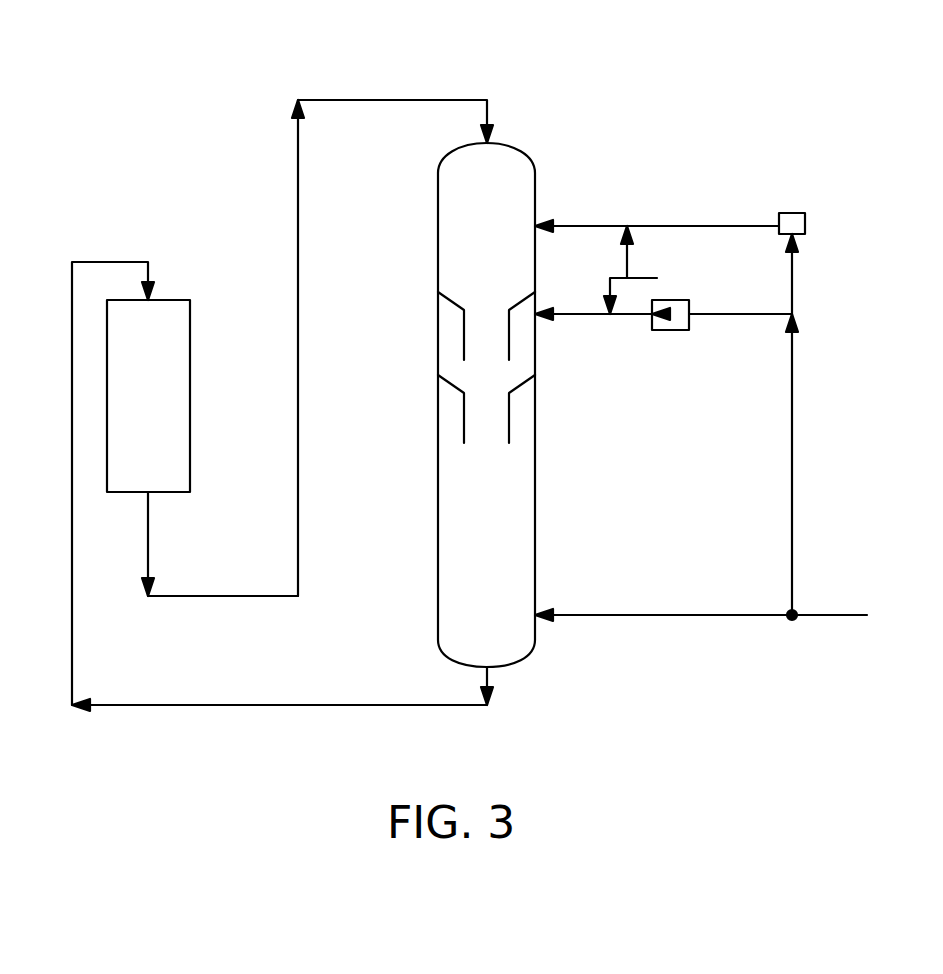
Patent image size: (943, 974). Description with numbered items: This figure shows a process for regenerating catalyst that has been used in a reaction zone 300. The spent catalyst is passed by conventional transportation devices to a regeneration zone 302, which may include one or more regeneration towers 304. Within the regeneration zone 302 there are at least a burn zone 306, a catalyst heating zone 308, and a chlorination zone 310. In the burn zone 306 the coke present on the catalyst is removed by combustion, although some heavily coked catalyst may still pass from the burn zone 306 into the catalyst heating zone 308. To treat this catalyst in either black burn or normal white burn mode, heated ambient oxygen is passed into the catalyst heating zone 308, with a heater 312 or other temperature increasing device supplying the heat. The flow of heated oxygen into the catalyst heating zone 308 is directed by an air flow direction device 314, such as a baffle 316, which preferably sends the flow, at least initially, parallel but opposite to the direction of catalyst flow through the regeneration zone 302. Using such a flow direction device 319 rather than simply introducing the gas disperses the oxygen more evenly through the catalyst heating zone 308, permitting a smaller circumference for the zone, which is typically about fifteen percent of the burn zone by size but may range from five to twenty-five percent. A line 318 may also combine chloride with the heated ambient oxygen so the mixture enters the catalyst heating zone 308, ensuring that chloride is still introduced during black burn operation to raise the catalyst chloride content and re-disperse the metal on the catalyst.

The reaction zone 300 is at (190, 252).
The regeneration zone 302 is at (450, 348).
The regeneration tower 304 is at (438, 498).
The burn zone 306 is at (548, 175).
The catalyst heating zone 308 is at (548, 233).
The chlorination zone 310 is at (477, 366).
The heater 312 is at (680, 300).
The air flow direction device 314 is at (518, 313).
The baffle 316 is at (510, 345).
The line 318 is at (635, 278).
The flow direction device 319 is at (790, 213).